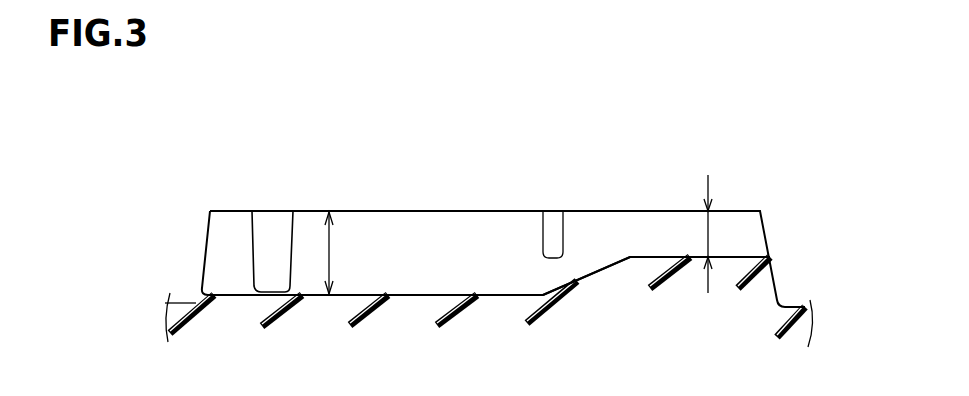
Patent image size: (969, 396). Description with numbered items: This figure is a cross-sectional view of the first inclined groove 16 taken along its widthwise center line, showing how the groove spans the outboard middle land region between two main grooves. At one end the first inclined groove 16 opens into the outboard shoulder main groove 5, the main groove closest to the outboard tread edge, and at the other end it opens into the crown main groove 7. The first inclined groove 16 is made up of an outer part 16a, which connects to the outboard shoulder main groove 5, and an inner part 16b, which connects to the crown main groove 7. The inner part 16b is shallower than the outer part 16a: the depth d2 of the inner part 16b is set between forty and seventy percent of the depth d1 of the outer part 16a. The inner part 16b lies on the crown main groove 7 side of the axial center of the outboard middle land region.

The outboard shoulder main groove 5 is at (178, 272).
The crown main groove 7 is at (797, 285).
The first inclined groove 16 is at (439, 248).
The outer part 16a is at (233, 288).
The inner part 16b is at (670, 255).
The depth of the outer part d1 is at (330, 252).
The depth of the inner part d2 is at (708, 233).